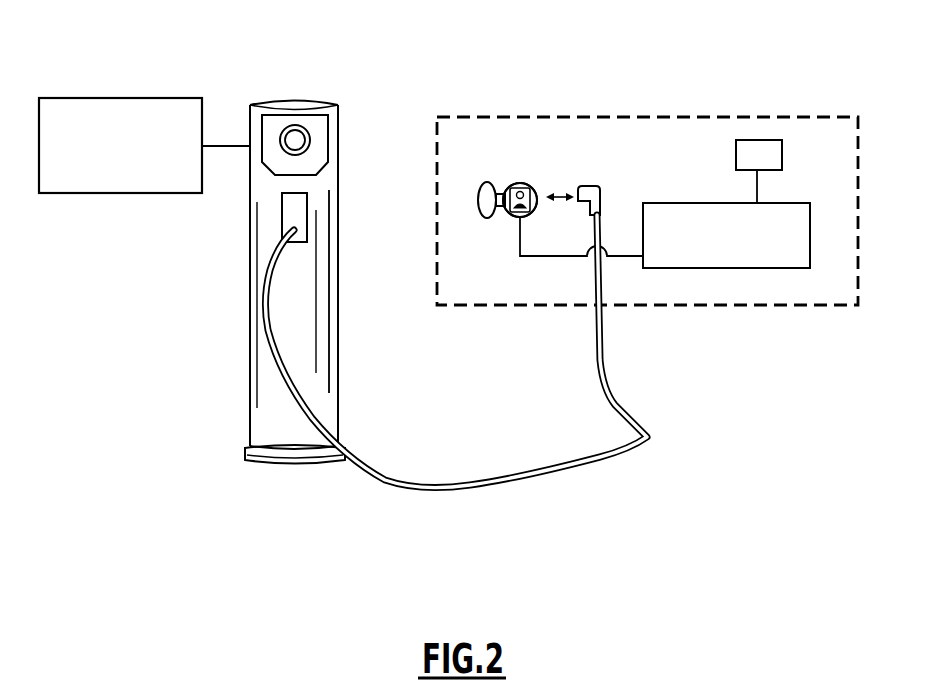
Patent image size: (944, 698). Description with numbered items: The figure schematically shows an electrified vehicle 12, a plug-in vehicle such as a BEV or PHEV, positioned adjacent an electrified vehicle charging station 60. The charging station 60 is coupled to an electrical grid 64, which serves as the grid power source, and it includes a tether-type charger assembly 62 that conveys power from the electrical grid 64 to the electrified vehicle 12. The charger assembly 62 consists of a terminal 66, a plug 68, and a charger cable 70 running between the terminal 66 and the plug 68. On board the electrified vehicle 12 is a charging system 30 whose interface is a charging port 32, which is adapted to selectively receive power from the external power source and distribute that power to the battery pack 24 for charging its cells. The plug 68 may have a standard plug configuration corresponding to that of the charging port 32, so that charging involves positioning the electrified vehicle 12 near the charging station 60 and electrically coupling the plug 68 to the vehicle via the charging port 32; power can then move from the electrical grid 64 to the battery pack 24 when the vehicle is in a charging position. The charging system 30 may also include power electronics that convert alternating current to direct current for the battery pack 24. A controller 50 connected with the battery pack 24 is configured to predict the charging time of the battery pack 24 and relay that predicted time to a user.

The electrified vehicle 12 is at (810, 116).
The battery pack 24 is at (679, 218).
The charging system 30 is at (564, 112).
The charging port 32 is at (510, 165).
The controller 50 is at (783, 152).
The electrified vehicle charging station 60 is at (256, 242).
The charger assembly 62 is at (226, 320).
The electrical grid 64 is at (125, 98).
The terminal 66 is at (320, 233).
The plug 68 is at (594, 186).
The charger cable 70 is at (506, 478).